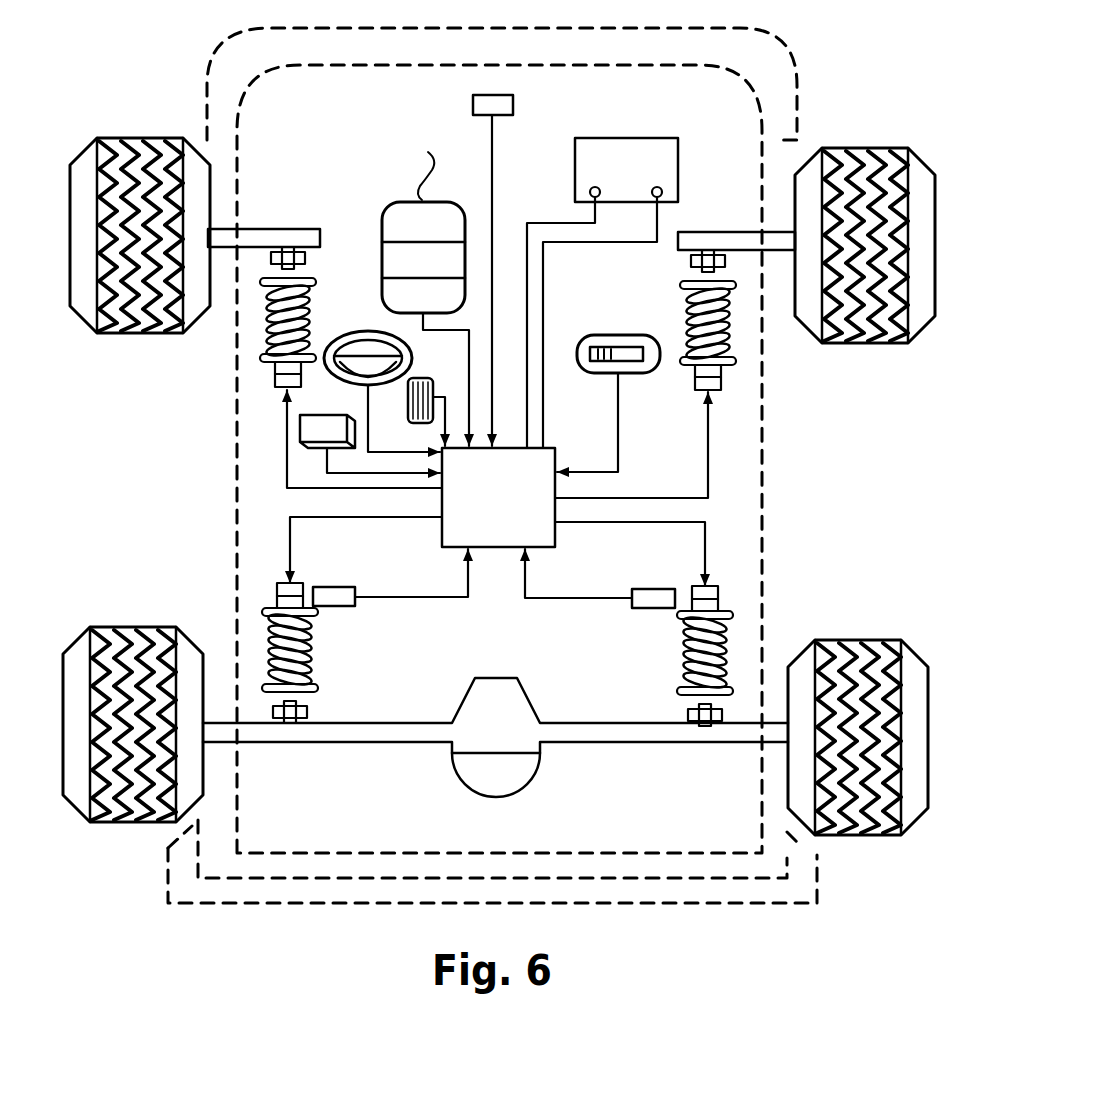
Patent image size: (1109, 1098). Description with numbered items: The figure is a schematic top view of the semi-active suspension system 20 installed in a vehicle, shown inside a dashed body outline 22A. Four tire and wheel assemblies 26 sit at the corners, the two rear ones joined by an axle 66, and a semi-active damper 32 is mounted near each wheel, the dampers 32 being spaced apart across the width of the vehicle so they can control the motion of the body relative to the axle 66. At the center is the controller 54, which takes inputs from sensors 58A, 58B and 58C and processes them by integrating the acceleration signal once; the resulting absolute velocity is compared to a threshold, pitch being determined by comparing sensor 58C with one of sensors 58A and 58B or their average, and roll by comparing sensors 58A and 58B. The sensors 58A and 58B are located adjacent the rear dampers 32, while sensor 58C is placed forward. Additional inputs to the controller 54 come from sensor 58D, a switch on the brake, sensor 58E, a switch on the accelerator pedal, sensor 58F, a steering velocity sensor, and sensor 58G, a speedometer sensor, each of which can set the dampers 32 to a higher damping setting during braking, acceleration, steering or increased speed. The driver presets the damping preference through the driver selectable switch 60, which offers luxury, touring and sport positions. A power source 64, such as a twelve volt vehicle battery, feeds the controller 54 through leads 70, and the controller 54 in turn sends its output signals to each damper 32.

The semi-active suspension system 20 is at (192, 440).
The vehicle body / chassis outline 22A is at (686, 26).
The tire and wheel assemblies 26 is at (78, 325).
The semi-active dampers 32 is at (252, 330).
The controller 54 is at (490, 548).
The sensor 58A is at (382, 642).
The sensor 58B is at (605, 642).
The sensor 58C is at (513, 103).
The sensor 58D is at (352, 462).
The sensor 58E is at (413, 378).
The sensor 58F is at (402, 338).
The sensor 58G is at (566, 402).
The driver selectable switch 60 is at (382, 258).
The power source 64 is at (678, 155).
The axle 66 is at (598, 745).
The leads 70 is at (527, 258).